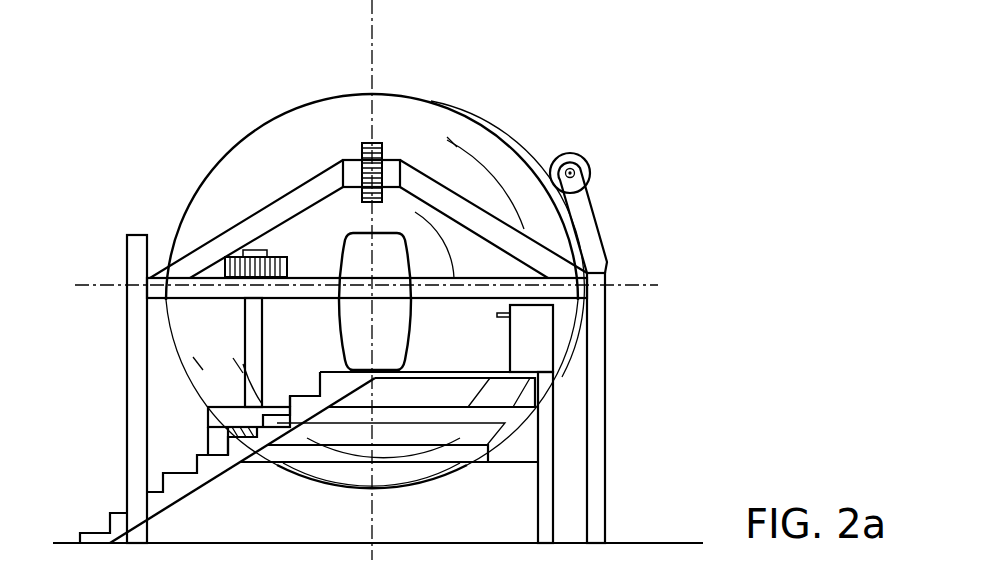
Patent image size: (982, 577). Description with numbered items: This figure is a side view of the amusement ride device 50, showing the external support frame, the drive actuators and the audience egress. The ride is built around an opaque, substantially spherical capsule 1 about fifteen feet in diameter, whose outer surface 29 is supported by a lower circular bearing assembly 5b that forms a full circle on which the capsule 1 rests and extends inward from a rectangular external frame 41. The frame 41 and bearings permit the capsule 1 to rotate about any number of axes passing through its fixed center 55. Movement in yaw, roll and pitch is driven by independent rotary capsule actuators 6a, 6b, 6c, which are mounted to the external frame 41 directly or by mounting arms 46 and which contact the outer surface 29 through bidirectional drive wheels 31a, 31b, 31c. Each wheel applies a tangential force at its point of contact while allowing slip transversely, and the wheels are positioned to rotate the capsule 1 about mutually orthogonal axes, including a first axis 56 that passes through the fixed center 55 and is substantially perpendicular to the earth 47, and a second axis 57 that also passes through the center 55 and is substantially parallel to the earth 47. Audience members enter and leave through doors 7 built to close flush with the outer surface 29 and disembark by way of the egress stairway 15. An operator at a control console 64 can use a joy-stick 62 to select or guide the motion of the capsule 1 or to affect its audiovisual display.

The spherical capsule 1 is at (452, 172).
The lower circular bearing assembly 5b is at (527, 417).
The rotary capsule actuator 6a is at (212, 262).
The rotary capsule actuator 6b is at (393, 157).
The rotary capsule actuator 6c is at (580, 178).
The doors 7 is at (340, 323).
The egress stairway 15 is at (109, 511).
The outer surface 29 is at (300, 86).
The bidirectional drive wheel 31a is at (233, 253).
The bidirectional drive wheel 31b is at (374, 142).
The bidirectional drive wheel 31c is at (570, 152).
The external frame 41 is at (125, 358).
The mounting arms 46 is at (258, 210).
The earth 47 is at (680, 542).
The amusement ride device 50 is at (186, 143).
The fixed center 55 is at (370, 278).
The first axis 56 is at (374, 18).
The second axis 57 is at (633, 284).
The joy-stick 62 is at (500, 318).
The control console 64 is at (545, 347).